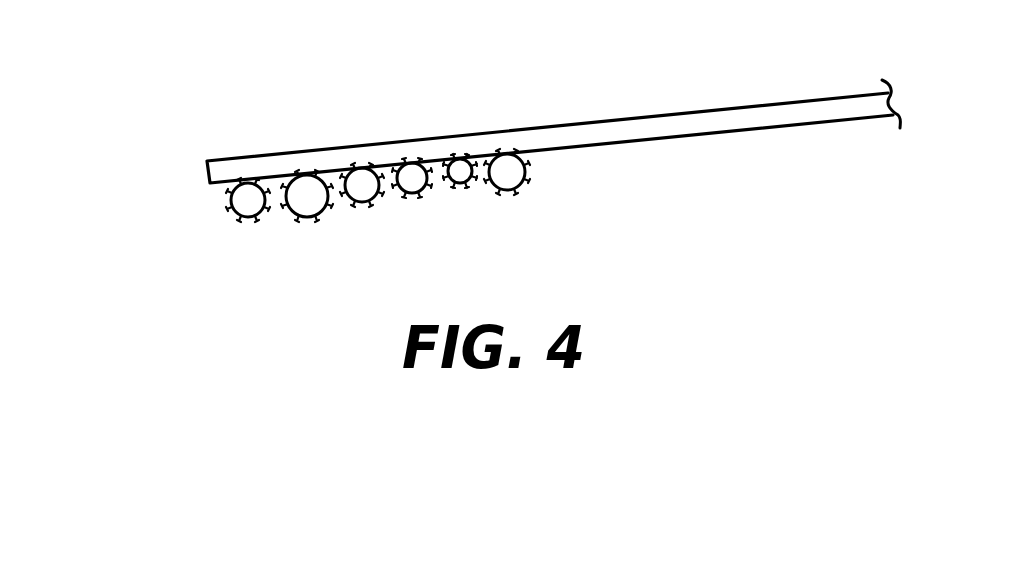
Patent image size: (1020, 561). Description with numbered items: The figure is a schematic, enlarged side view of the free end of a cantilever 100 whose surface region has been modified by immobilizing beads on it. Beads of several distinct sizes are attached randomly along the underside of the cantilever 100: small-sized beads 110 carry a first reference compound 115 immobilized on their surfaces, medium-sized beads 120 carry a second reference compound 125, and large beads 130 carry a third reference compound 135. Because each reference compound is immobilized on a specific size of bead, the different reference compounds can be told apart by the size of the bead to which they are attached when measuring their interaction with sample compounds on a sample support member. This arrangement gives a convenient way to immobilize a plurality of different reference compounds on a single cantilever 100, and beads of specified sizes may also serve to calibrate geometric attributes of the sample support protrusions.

The cantilever 100 is at (650, 116).
The small-sized beads 110 is at (458, 168).
The first reference compound 115 is at (452, 177).
The medium-sized beads 120 is at (242, 192).
The second reference compound 125 is at (247, 217).
The large beads 130 is at (508, 172).
The third reference compound 135 is at (517, 187).